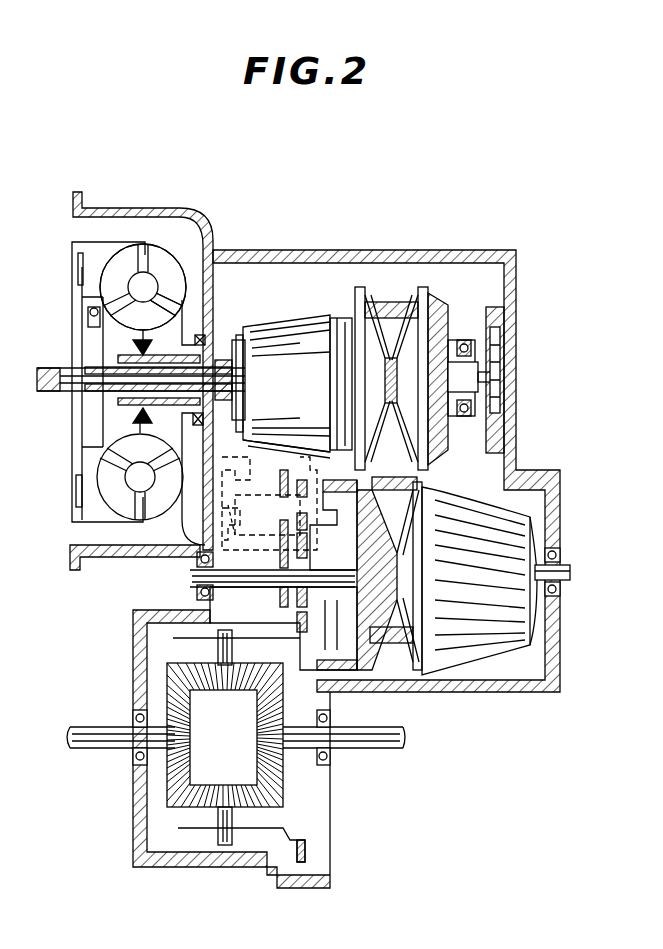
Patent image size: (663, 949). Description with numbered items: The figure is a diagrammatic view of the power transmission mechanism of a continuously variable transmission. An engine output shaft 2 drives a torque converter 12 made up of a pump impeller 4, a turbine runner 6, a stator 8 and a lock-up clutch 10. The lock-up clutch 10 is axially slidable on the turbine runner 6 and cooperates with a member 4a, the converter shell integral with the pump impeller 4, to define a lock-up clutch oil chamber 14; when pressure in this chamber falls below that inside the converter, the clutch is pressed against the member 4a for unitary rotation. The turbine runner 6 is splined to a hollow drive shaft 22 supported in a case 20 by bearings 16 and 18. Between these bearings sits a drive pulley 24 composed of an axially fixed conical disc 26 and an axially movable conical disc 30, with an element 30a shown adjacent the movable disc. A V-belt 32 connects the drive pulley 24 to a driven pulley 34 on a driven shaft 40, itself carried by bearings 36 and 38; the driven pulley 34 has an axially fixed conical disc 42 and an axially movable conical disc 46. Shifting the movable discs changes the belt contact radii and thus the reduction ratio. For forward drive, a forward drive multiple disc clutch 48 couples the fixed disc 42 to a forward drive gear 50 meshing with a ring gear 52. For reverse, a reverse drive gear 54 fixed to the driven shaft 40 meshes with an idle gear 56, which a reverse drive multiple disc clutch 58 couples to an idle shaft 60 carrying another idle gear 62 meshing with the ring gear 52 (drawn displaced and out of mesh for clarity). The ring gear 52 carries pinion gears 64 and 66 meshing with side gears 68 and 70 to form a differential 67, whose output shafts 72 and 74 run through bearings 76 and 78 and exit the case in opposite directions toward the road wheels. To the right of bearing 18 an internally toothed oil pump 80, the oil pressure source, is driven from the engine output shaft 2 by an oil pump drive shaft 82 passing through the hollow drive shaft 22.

The engine output shaft 2 is at (52, 368).
The pump impeller 4 is at (173, 255).
The member (converter shell) 4a is at (70, 463).
The turbine runner 6 is at (103, 268).
The stator 8 is at (162, 320).
The lock-up clutch 10 is at (78, 272).
The torque converter 12 is at (60, 515).
The lock-up clutch oil chamber 14 is at (75, 303).
The bearing 16 is at (225, 350).
The bearing 18 is at (465, 342).
The case 20 is at (518, 262).
The drive shaft 22 is at (235, 395).
The drive pulley 24 is at (425, 285).
The axially fixed conical disc 26 is at (437, 298).
The axially movable conical disc 30 is at (360, 285).
The hub 30a is at (332, 318).
The V-belt 32 is at (392, 310).
The driven pulley 34 is at (405, 665).
The bearing 36 is at (195, 593).
The bearing 38 is at (565, 555).
The driven shaft 40 is at (325, 568).
The axially fixed conical disc 42 is at (347, 670).
The axially movable conical disc 46 is at (425, 487).
The forward drive multiple disc clutch 48 is at (337, 633).
The forward drive gear 50 is at (293, 607).
The ring gear 52 is at (241, 732).
The reverse drive gear 54 is at (277, 595).
The idle gear 56 is at (237, 452).
The reverse drive multiple disc clutch 58 is at (265, 432).
The idle shaft 60 is at (240, 535).
The idle gear 62 is at (296, 482).
The pinion gear 64 is at (250, 664).
The pinion gear 66 is at (270, 805).
The differential 67 is at (200, 820).
The side gear 68 is at (225, 735).
The side gear 70 is at (260, 744).
The output shaft 72 is at (110, 748).
The output shaft 74 is at (385, 745).
The bearing 76 is at (130, 720).
The bearing 78 is at (330, 758).
The oil pump 80 is at (505, 323).
The oil pump drive shaft 82 is at (88, 388).